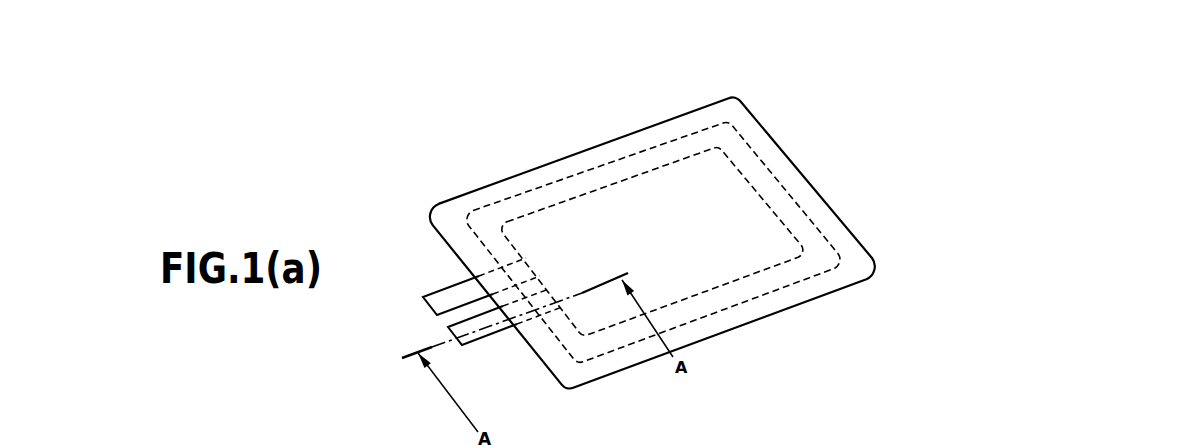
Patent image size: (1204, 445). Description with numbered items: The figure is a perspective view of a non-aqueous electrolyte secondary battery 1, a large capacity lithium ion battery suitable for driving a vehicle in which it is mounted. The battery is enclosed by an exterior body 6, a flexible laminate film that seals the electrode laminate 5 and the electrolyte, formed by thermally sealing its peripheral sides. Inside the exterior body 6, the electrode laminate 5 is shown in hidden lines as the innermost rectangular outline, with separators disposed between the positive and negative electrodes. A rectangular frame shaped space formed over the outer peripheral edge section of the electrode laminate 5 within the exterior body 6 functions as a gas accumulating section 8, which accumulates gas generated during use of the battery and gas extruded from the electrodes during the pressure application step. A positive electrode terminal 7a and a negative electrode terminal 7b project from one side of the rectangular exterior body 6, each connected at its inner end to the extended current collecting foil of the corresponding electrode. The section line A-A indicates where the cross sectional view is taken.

The non-aqueous electrolyte secondary battery 1 is at (845, 112).
The electrode laminate 5 is at (740, 213).
The exterior body 6 is at (733, 322).
The positive electrode terminal 7a is at (452, 334).
The negative electrode terminal 7b is at (441, 292).
The gas accumulating section 8 is at (631, 150).